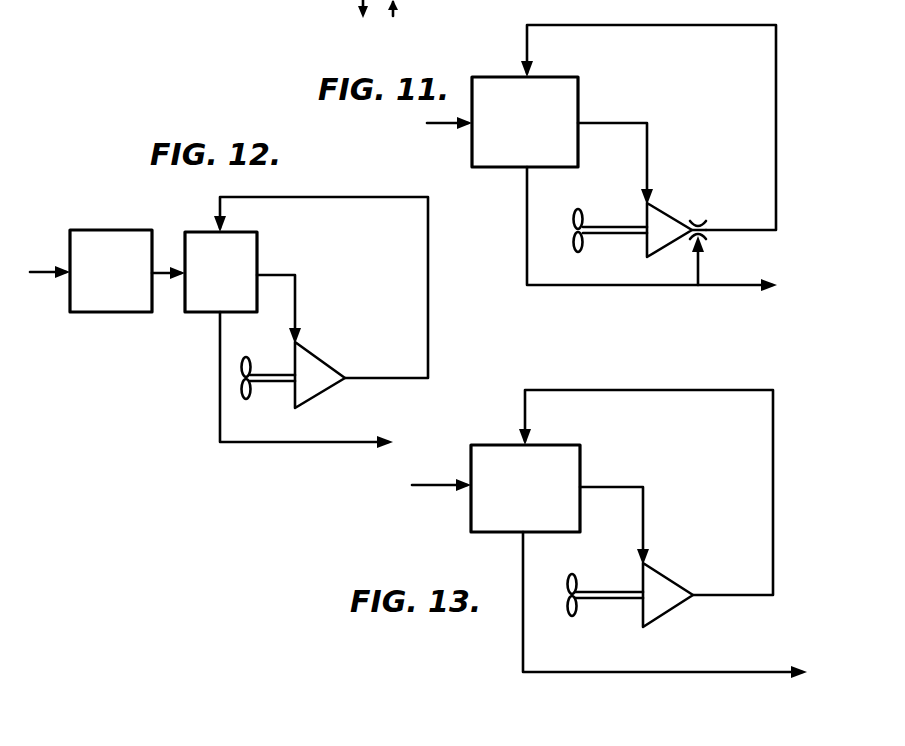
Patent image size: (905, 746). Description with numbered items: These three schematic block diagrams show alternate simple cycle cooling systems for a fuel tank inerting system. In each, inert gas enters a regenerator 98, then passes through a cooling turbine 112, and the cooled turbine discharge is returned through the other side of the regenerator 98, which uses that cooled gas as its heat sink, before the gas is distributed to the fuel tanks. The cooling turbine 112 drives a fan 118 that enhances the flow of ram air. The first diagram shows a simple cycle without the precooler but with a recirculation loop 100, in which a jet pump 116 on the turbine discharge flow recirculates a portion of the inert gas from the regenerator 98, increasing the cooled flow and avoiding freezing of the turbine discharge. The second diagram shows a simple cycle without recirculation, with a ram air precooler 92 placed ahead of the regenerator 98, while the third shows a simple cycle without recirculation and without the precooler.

In FIG. 12, the precooler 92 is at (140, 230).
In FIG. 11, the regenerator 98 is at (578, 90).
In FIG. 12, the regenerator 98 is at (257, 248).
In FIG. 13, the regenerator 98 is at (580, 462).
In FIG. 11, the recirculation loop 100 is at (776, 118).
In FIG. 12, the recirculation loop 100 is at (428, 292).
In FIG. 13, the recirculation loop 100 is at (773, 408).
In FIG. 11, the cooling turbine 112 is at (668, 213).
In FIG. 12, the cooling turbine 112 is at (335, 368).
In FIG. 13, the cooling turbine 112 is at (670, 583).
In FIG. 11, the jet pump 116 is at (703, 226).
In FIG. 11, the fan 118 is at (580, 213).
In FIG. 12, the fan 118 is at (260, 344).
In FIG. 13, the fan 118 is at (590, 564).